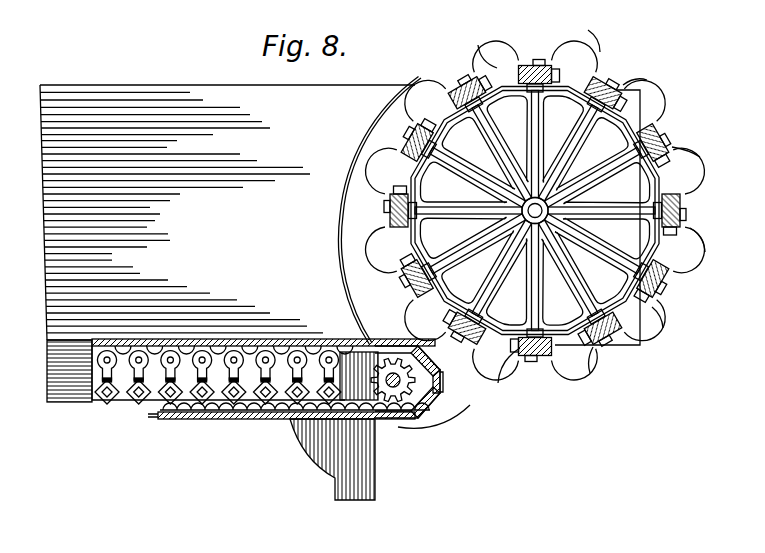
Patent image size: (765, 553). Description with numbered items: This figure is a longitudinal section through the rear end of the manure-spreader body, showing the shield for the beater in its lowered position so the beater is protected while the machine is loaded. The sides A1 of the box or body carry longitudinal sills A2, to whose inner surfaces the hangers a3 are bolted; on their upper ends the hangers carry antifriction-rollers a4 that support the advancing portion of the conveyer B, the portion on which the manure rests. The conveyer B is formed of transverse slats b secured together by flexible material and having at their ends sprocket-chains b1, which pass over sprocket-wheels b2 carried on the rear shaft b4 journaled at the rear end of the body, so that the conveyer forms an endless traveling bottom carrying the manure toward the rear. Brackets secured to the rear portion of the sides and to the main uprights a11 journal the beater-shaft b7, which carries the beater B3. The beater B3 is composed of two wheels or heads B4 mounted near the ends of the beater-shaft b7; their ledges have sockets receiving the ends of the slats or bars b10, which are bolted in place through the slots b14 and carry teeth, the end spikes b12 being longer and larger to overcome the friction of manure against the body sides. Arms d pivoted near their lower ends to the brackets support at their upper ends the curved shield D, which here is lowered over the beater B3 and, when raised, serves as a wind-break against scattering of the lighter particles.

The sides of the body A1 is at (227, 212).
The sills A2 is at (50, 376).
The hangers a3 is at (143, 365).
The antifriction-rollers a4 is at (306, 341).
The conveyer B is at (196, 341).
The transverse slats b is at (262, 341).
The sprocket-chains b1 is at (440, 373).
The sprocket-wheels b2 is at (399, 420).
The shaft b4 is at (443, 383).
The beater-shaft b7 is at (478, 200).
The slats or bars b10 is at (488, 76).
The end spikes b12 is at (480, 46).
The slots b14 is at (560, 70).
The beater B3 is at (655, 168).
The wheels or heads B4 is at (645, 248).
The arms d is at (424, 95).
The curved shield D is at (346, 250).
The main uprights a11 is at (332, 459).